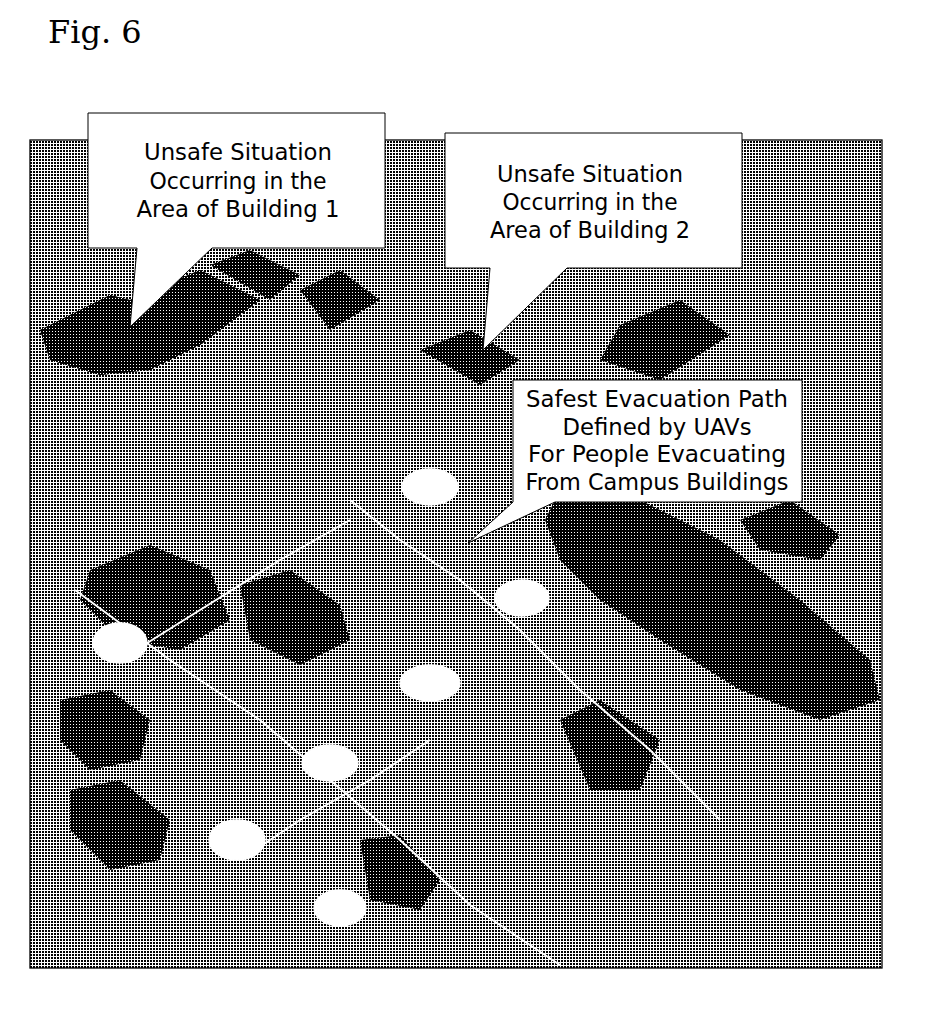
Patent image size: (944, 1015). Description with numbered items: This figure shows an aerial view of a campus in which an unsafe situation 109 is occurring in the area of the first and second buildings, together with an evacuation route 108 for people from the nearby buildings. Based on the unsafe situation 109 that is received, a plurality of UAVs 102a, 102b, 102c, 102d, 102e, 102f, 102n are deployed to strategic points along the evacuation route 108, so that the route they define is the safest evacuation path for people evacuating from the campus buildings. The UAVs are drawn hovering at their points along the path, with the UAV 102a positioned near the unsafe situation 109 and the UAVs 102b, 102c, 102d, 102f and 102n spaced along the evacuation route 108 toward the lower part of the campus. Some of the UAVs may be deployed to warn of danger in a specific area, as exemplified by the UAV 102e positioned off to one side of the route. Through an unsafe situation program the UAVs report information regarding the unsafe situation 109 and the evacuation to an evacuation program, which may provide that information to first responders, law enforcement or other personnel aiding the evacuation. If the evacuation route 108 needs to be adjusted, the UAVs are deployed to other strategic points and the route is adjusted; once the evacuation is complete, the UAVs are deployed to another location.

The UAV 102a is at (432, 470).
The UAV 102b is at (540, 615).
The UAV 102c is at (455, 685).
The UAV 102d is at (343, 778).
The UAV 102e is at (112, 658).
The UAV 102f is at (257, 833).
The UAV 102n is at (365, 902).
The evacuation route 108 is at (463, 533).
The unsafe situation 109 is at (135, 330).